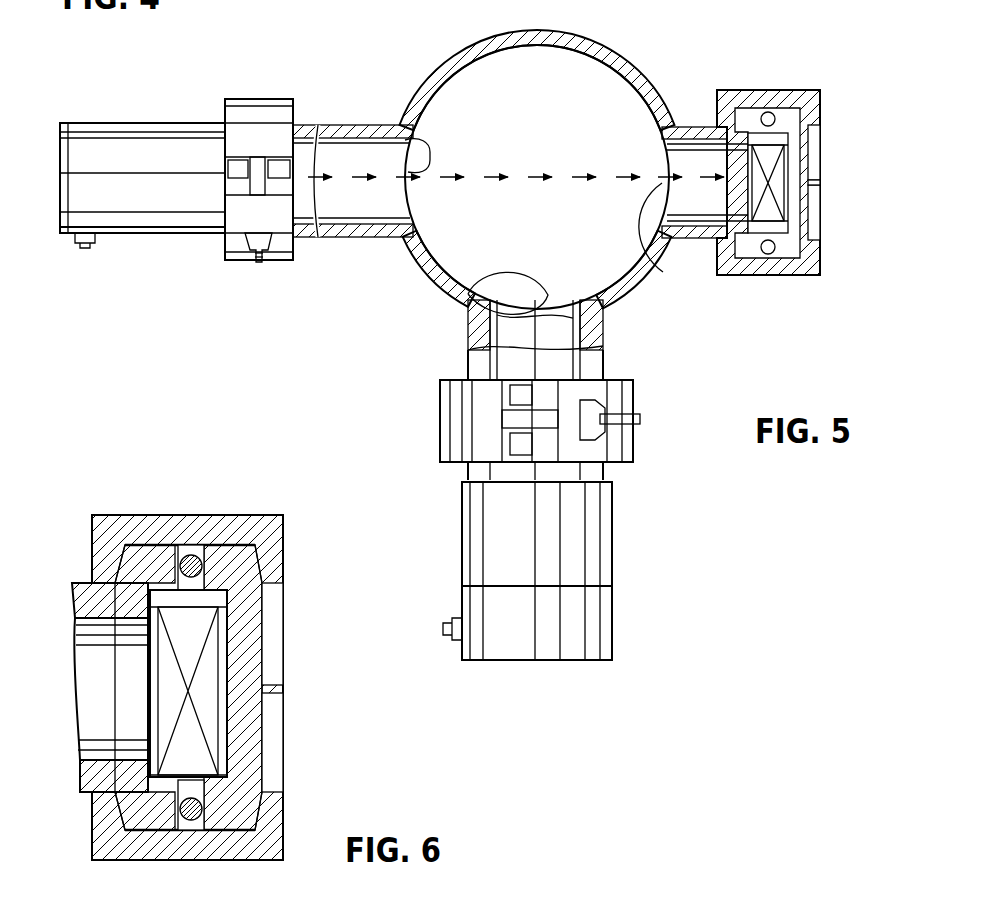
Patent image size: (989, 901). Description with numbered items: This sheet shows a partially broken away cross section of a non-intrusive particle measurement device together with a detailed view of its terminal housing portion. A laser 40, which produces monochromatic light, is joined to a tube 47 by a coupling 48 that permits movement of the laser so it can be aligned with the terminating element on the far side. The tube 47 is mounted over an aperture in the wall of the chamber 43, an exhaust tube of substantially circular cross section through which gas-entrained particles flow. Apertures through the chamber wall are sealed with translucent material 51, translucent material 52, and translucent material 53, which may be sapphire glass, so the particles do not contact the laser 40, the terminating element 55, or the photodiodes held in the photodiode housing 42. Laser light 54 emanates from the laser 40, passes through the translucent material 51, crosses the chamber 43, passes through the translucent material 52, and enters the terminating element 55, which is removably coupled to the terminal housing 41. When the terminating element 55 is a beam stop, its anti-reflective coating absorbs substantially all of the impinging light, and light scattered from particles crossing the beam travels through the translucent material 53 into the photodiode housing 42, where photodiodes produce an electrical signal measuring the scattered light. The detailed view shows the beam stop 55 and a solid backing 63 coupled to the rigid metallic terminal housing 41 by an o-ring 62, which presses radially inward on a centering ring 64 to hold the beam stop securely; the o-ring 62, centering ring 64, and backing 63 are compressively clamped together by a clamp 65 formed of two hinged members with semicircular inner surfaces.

In FIG. 5, the laser 40 is at (118, 124).
In FIG. 5, the terminal housing 41 is at (822, 252).
In FIG. 6, the terminal housing 41 is at (80, 580).
In FIG. 5, the photodiode housing 42 is at (595, 555).
In FIG. 5, the chamber 43 is at (645, 96).
In FIG. 5, the tube 47 is at (300, 126).
In FIG. 5, the coupling 48 is at (248, 250).
In FIG. 5, the translucent material 51 is at (426, 108).
In FIG. 5, the translucent material 52 is at (645, 222).
In FIG. 5, the translucent material 53 is at (450, 266).
In FIG. 5, the laser light 54 is at (540, 175).
In FIG. 5, the terminating element 55 is at (822, 170).
In FIG. 6, the terminating element 55 is at (158, 733).
In FIG. 6, the o-ring 62 is at (200, 566).
In FIG. 6, the solid backing 63 is at (255, 748).
In FIG. 6, the centering ring 64 is at (195, 572).
In FIG. 6, the clamp 65 is at (215, 522).